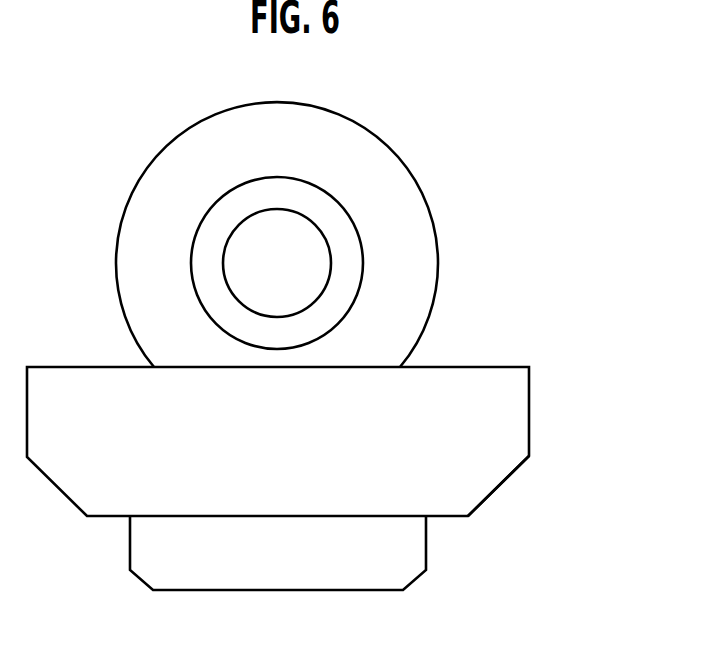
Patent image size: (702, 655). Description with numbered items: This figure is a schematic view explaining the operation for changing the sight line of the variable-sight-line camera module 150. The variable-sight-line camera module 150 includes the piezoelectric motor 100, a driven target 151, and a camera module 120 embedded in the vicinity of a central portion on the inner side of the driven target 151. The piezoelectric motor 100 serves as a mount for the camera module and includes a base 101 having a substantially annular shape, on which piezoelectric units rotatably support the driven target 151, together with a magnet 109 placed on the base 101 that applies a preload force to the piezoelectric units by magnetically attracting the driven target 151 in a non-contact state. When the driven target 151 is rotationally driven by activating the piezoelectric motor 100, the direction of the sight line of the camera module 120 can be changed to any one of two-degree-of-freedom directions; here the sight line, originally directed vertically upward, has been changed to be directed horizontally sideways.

The variable-sight-line camera module 150 is at (345, 192).
The driven target 151 is at (420, 188).
The camera module 120 is at (347, 260).
The piezoelectric motor 100 is at (324, 467).
The base 101 is at (500, 487).
The magnet 109 is at (280, 578).